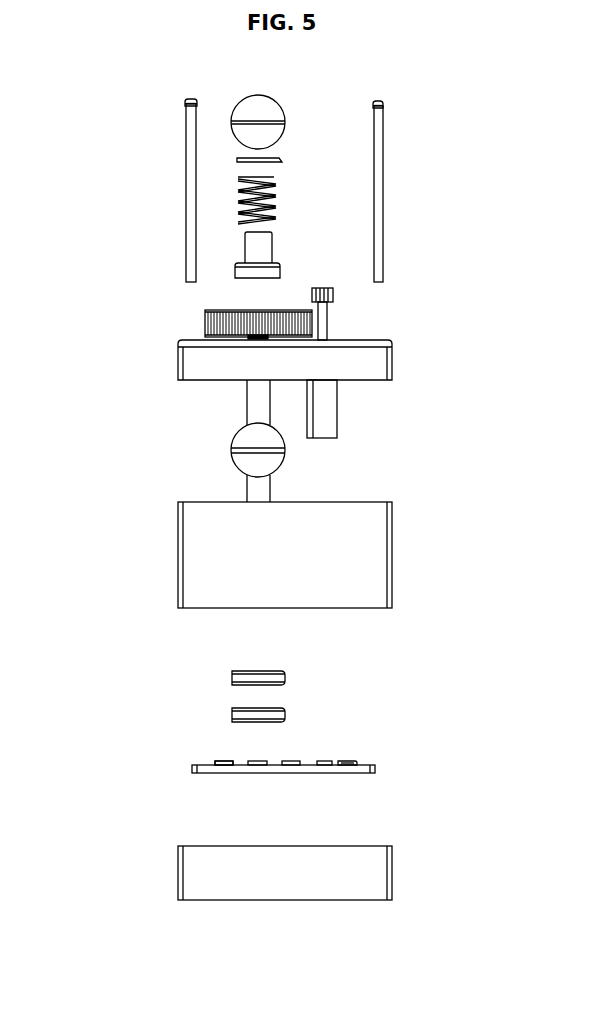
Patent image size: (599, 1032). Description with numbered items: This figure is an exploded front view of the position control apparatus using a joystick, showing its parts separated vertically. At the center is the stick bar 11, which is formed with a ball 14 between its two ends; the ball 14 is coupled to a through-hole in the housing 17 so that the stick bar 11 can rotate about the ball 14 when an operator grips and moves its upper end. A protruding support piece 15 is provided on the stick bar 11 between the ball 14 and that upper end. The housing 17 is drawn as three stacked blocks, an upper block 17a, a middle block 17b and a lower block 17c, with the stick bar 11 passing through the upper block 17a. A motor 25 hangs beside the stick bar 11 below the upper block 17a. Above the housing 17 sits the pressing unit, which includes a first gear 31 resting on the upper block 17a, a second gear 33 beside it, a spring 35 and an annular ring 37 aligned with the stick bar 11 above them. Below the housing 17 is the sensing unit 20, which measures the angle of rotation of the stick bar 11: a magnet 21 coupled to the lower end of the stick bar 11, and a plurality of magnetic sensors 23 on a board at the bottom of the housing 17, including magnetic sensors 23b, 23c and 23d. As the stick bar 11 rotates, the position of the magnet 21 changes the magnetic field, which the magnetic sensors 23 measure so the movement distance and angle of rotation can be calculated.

The stick bar 11 is at (253, 405).
The ball 14 is at (248, 437).
The protruding support piece 15 is at (281, 160).
The housing 17 is at (285, 619).
The housing part 17a is at (375, 368).
The housing part 17b is at (368, 560).
The housing part 17c is at (372, 873).
The sensing unit 20 is at (228, 752).
The magnet 21 is at (285, 676).
The magnetic sensors 23 is at (230, 762).
The magnetic sensor 23b is at (293, 760).
The magnetic sensor 23c is at (257, 766).
The magnetic sensor 23d is at (232, 760).
The motor 25 is at (325, 426).
The first gear 31 is at (205, 318).
The second gear 33 is at (334, 293).
The spring 35 is at (277, 192).
The annular ring 37 is at (265, 248).